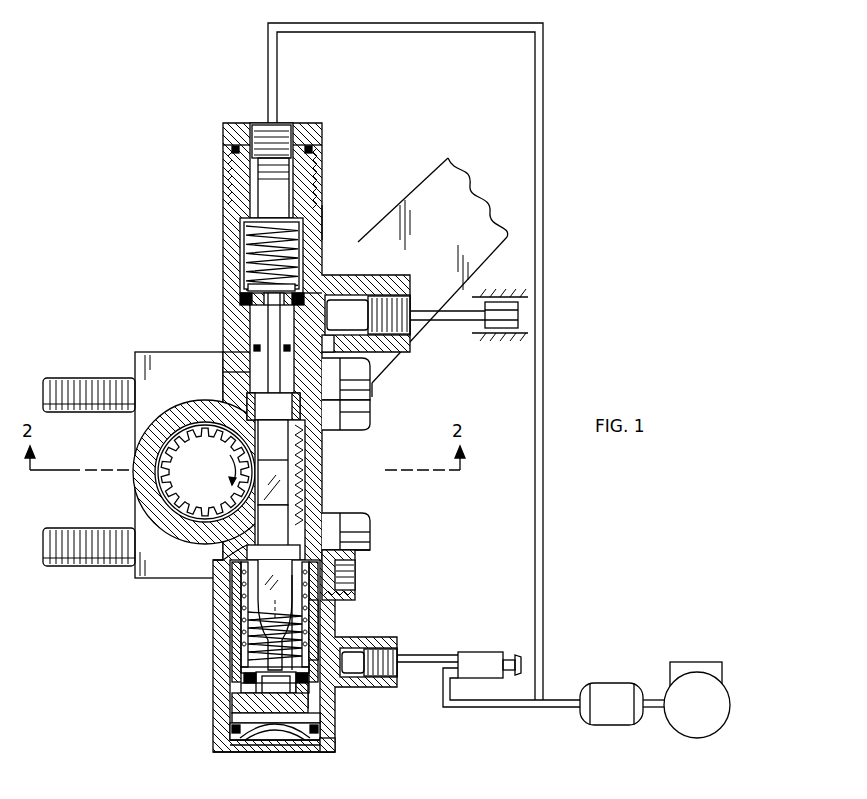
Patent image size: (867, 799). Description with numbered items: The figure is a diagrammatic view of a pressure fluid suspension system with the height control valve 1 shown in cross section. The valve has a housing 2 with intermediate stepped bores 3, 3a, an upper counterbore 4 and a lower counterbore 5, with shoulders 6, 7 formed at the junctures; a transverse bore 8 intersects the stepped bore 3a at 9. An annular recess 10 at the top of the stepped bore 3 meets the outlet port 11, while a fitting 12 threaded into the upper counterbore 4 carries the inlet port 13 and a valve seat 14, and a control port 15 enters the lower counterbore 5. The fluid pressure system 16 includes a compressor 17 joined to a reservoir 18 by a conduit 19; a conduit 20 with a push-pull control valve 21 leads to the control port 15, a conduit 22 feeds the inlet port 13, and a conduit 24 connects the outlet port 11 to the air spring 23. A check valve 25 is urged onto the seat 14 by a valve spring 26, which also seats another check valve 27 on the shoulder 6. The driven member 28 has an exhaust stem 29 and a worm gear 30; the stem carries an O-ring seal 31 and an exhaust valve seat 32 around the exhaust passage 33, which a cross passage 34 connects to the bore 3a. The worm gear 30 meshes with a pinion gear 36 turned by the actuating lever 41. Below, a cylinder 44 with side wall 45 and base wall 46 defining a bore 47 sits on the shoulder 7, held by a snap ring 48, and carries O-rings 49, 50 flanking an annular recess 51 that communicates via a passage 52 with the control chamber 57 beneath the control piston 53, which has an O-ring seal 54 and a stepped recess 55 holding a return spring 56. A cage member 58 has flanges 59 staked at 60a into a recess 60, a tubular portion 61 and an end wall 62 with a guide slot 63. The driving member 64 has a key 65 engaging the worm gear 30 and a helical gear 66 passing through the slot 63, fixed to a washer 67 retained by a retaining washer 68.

The height control valve 1 is at (205, 130).
The housing 2 is at (223, 165).
The stepped bore 3 is at (335, 374).
The stepped bore 3a is at (310, 398).
The upper counterbore 4 is at (322, 222).
The lower counterbore 5 is at (232, 752).
The shoulder 6 is at (240, 300).
The shoulder 7 is at (325, 520).
The transverse bore 8 is at (150, 490).
The intersection 9 is at (205, 472).
The annular recess 10 is at (264, 316).
The outlet port 11 is at (410, 300).
The fitting 12 is at (322, 137).
The inlet port 13 is at (283, 128).
The valve seat 14 is at (292, 225).
The control port 15 is at (400, 650).
The fluid pressure system 16 is at (562, 636).
The compressor 17 is at (695, 668).
The reservoir 18 is at (612, 683).
The conduit 19 is at (652, 699).
The conduit 20 is at (490, 707).
The control valve 21 is at (484, 660).
The conduit 22 is at (545, 493).
The air spring 23 is at (502, 302).
The conduit 24 is at (450, 322).
The check valve 25 is at (240, 232).
The valve spring 26 is at (246, 253).
The check valve 27 is at (246, 278).
The valve operating member 28 is at (252, 375).
The exhaust stem 29 is at (268, 337).
The worm gear 30 is at (300, 462).
The O-ring seal 31 is at (252, 355).
The exhaust valve seat 32 is at (320, 295).
The exhaust passage 33 is at (329, 344).
The cross passage 34 is at (290, 407).
The pinion gear 36 is at (220, 466).
The actuating lever 41 is at (430, 190).
The cylinder 44 is at (252, 745).
The annular side wall 45 is at (241, 620).
The base wall 46 is at (270, 740).
The cylinder bore 47 is at (241, 655).
The snap ring 48 is at (322, 738).
The O-ring 49 is at (340, 592).
The O-ring 50 is at (234, 728).
The annular recess 51 is at (240, 705).
The passage 52 is at (312, 716).
The control piston 53 is at (288, 745).
The O-ring seal 54 is at (308, 700).
The stepped recess 55 is at (276, 686).
The return spring 56 is at (232, 600).
The control chamber 57 is at (300, 744).
The cage member 58 is at (355, 572).
The flanges 59 is at (235, 575).
The annular recess 60 is at (218, 556).
The staking 60a is at (340, 548).
The tubular portion 61 is at (318, 612).
The end wall 62 is at (300, 632).
The guide slot 63 is at (275, 615).
The driving member 64 is at (282, 540).
The key 65 is at (273, 458).
The helical gear 66 is at (248, 640).
The washer 67 is at (241, 690).
The retaining washer 68 is at (244, 678).